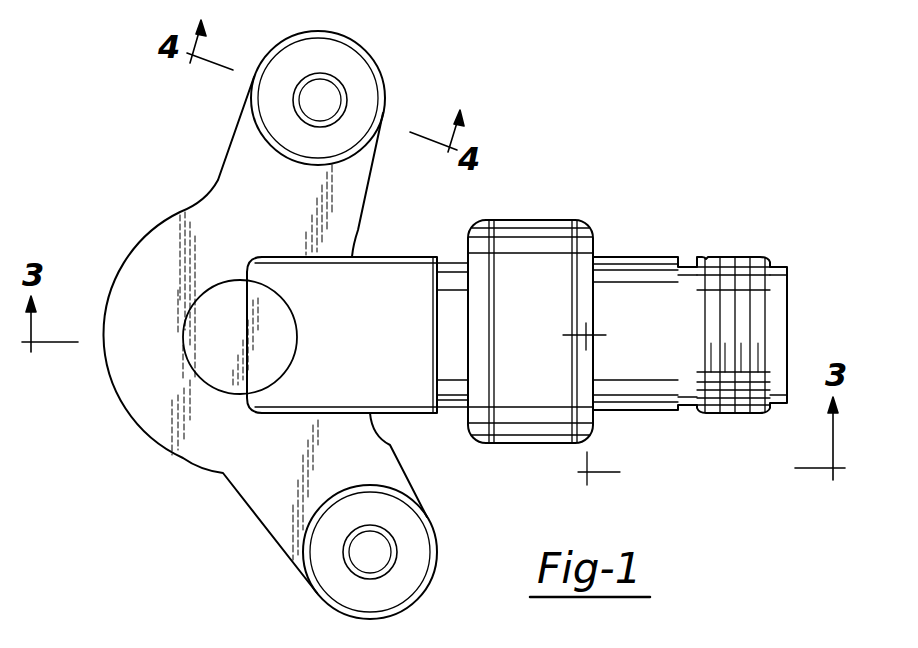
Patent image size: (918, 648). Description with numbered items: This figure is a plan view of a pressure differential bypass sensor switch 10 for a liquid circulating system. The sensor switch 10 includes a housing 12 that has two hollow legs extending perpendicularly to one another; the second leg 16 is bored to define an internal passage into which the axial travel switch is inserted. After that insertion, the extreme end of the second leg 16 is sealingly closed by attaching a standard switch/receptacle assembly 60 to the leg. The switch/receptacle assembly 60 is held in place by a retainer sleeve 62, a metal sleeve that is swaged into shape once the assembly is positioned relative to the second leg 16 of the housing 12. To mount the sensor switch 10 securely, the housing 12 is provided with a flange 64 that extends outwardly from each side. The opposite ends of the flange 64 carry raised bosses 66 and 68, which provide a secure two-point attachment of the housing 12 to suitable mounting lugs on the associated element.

The pressure differential bypass sensor switch 10 is at (530, 210).
The housing 12 is at (185, 378).
The second hollow leg 16 is at (405, 255).
The switch/receptacle assembly 60 is at (643, 255).
The retainer sleeve 62 is at (503, 447).
The flange 64 is at (223, 473).
The raised boss 66 is at (438, 563).
The raised boss 68 is at (388, 72).